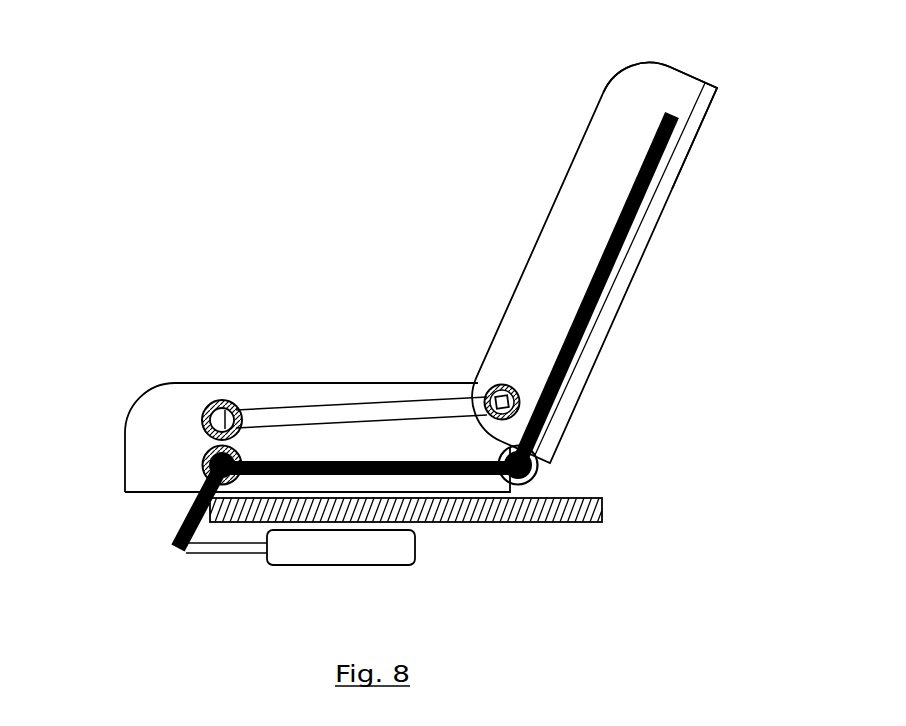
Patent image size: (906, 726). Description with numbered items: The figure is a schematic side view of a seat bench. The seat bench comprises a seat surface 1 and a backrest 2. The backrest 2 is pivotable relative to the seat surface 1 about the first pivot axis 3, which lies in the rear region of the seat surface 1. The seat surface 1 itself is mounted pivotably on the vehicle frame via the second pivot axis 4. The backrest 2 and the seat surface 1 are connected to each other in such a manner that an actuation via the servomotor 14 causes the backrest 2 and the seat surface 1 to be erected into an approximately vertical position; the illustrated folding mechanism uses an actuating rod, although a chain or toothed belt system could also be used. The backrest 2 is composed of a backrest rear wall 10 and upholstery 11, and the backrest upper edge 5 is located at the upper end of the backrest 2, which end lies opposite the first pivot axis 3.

The seat surface 1 is at (175, 407).
The backrest 2 is at (578, 197).
The first pivot axis 3 is at (532, 468).
The second pivot axis 4 is at (210, 469).
The backrest upper edge 5 is at (682, 72).
The backrest rear wall 10 is at (682, 152).
The upholstery 11 is at (622, 98).
The servomotor 14 is at (377, 548).